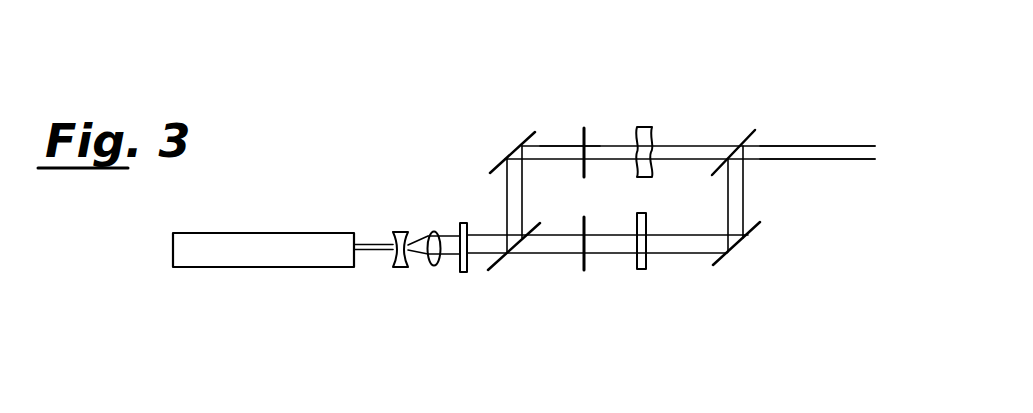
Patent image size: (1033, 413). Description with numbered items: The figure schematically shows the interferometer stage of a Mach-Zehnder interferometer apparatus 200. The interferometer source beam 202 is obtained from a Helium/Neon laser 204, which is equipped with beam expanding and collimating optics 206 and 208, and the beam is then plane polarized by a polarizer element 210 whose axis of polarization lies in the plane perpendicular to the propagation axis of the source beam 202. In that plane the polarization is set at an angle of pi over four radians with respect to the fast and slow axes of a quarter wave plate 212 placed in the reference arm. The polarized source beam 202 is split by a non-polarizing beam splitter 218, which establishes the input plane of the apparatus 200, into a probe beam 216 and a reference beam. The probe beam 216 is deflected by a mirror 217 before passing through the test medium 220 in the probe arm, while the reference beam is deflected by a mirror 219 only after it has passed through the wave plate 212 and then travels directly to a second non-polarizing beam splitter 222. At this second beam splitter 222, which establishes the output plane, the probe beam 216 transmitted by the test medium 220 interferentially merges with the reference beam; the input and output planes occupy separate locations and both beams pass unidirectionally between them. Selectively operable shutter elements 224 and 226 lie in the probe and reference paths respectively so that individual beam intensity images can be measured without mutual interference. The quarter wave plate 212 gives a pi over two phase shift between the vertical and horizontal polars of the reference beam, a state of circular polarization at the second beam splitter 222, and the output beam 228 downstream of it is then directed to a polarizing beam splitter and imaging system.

The Mach-Zehnder interferometer apparatus 200 is at (389, 104).
The interferometer source beam 202 is at (480, 256).
The Helium/Neon laser 204 is at (182, 257).
The beam expanding and collimating optics 206 is at (398, 231).
The beam expanding and collimating optics 208 is at (435, 231).
The polarizer element 210 is at (460, 273).
The quarter wave plate 212 is at (645, 268).
The probe beam 216 is at (553, 145).
The mirror 217 is at (526, 135).
The non-polarizing beam splitter 218 is at (500, 263).
The mirror 219 is at (723, 264).
The test medium 220 is at (653, 128).
The second non-polarizing beam splitter 222 is at (745, 130).
The shutter element 224 is at (587, 129).
The shutter element 226 is at (588, 270).
The output beam 228 is at (842, 161).